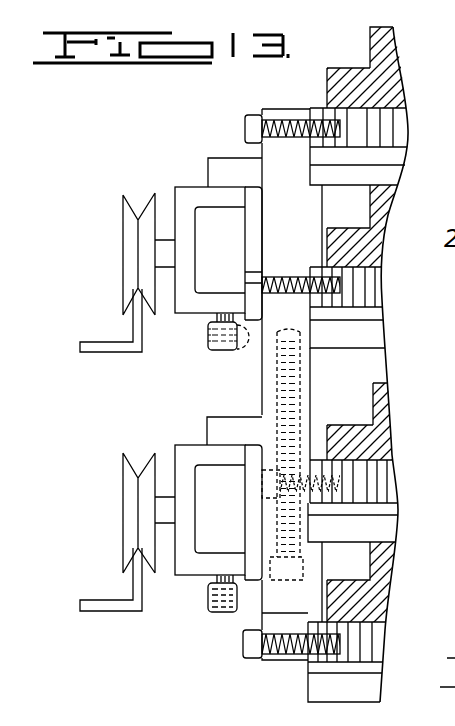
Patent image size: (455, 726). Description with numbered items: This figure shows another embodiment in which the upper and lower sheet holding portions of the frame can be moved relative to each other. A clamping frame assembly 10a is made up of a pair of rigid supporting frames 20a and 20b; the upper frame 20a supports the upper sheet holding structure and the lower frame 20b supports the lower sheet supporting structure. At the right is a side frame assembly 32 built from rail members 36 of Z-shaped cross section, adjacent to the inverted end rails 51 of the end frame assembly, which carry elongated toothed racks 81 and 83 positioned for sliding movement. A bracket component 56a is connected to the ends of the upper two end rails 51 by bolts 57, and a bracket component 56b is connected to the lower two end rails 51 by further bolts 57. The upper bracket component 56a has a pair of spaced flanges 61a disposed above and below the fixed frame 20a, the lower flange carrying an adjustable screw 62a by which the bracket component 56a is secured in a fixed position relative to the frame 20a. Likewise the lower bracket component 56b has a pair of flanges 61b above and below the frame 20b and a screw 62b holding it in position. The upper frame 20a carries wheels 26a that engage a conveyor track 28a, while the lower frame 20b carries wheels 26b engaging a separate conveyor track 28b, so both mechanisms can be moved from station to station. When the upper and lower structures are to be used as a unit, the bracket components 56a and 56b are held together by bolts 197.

The side frame assembly 32 is at (362, 28).
The side rail member 36 is at (343, 77).
The clamping frame assembly 10a is at (253, 108).
The bolt 57 is at (247, 119).
The flange 61a is at (228, 132).
The toothed rack 81 is at (390, 117).
The rigid supporting frame 20a is at (186, 186).
The end rail 51 is at (390, 172).
The bracket component 56a is at (268, 213).
The wheel 26a is at (123, 230).
The conveyor track 28a is at (102, 313).
The flange 61b is at (213, 418).
The adjustable screw 62a is at (310, 385).
The rigid supporting frame 20b is at (187, 450).
The wheel 26b is at (123, 495).
The bolt 197 is at (257, 462).
The bracket component 56b is at (262, 505).
The toothed rack 83 is at (377, 475).
The conveyor track 28b is at (92, 602).
The screw 62b is at (222, 623).